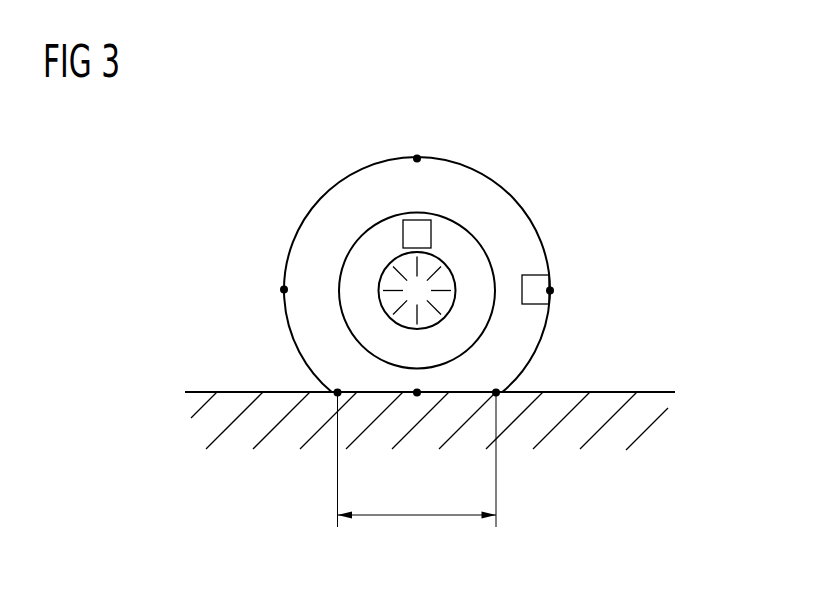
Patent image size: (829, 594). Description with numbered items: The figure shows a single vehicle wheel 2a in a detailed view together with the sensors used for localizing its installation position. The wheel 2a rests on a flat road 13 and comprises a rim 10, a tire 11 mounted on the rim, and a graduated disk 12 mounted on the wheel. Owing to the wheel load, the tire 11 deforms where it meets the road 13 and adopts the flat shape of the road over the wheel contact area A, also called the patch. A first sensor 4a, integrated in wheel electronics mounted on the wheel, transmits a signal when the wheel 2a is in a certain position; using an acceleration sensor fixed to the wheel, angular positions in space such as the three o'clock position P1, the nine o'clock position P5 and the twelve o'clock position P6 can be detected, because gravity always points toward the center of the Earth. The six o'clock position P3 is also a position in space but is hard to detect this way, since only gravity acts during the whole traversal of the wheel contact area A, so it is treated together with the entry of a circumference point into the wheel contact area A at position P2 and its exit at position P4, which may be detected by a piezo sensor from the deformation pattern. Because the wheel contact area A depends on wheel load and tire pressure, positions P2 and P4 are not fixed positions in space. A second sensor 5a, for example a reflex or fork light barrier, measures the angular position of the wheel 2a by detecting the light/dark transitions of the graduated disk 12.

The wheel 2a is at (592, 178).
The first sensor 4a is at (530, 283).
The second sensor 5a is at (420, 233).
The rim 10 is at (363, 278).
The tire 11 is at (323, 274).
The graduated disk 12 is at (388, 279).
The road 13 is at (203, 392).
The 3-o'clock-position P1 is at (568, 289).
The entry position P2 is at (522, 381).
The 6-o'clock-position P3 is at (432, 381).
The exit position P4 is at (313, 381).
The 9-o'clock-position P5 is at (265, 288).
The 12-o'clock-position P6 is at (419, 141).
The wheel contact area A is at (417, 460).